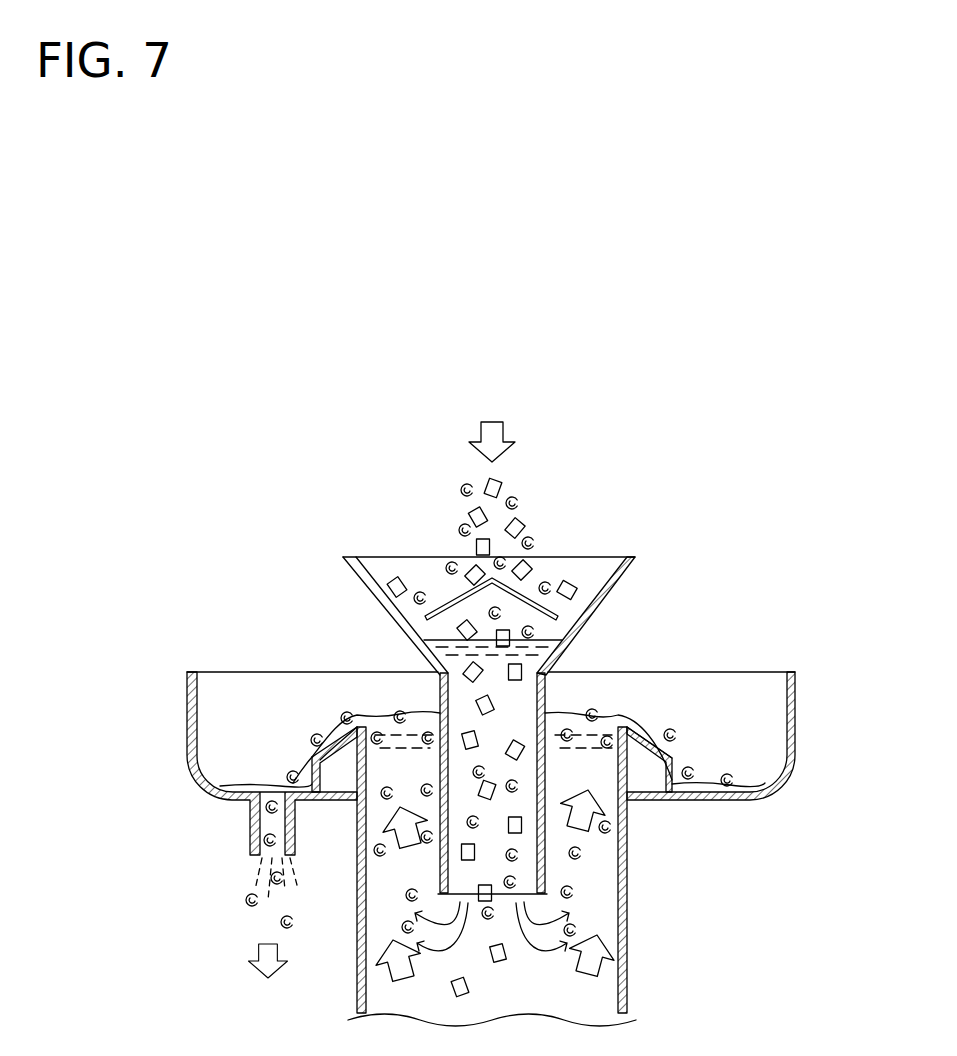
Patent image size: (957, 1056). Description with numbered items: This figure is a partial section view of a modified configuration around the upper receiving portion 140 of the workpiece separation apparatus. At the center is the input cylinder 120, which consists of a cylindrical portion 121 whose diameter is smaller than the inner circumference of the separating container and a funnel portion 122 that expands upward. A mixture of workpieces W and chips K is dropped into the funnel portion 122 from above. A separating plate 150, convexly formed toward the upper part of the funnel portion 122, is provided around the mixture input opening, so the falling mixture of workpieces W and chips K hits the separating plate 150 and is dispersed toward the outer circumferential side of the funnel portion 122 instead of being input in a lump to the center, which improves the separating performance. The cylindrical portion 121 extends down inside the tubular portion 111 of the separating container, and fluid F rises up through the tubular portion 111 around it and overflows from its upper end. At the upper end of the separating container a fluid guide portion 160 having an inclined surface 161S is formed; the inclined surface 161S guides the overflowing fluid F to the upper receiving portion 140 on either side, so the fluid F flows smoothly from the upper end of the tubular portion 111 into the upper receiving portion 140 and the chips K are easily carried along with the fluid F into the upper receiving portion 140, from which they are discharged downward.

The tubular portion 111 is at (628, 932).
The input cylinder 120 is at (283, 567).
The cylindrical portion 121 is at (440, 695).
The funnel portion 122 is at (377, 592).
The upper receiving portion 140 is at (188, 720).
The separating plate 150 is at (530, 587).
The fluid guide portion 160 is at (655, 745).
The inclined surface 161S is at (645, 734).
The workpiece W is at (400, 582).
The chip K is at (447, 556).
The fluid F is at (556, 716).